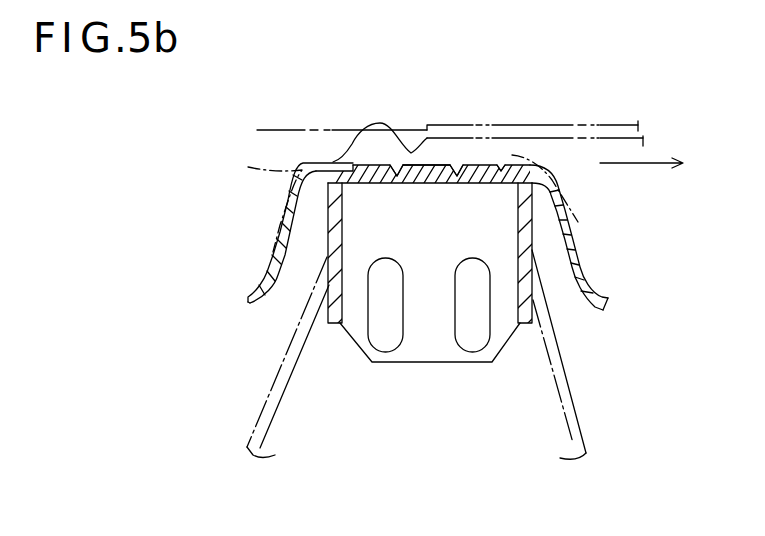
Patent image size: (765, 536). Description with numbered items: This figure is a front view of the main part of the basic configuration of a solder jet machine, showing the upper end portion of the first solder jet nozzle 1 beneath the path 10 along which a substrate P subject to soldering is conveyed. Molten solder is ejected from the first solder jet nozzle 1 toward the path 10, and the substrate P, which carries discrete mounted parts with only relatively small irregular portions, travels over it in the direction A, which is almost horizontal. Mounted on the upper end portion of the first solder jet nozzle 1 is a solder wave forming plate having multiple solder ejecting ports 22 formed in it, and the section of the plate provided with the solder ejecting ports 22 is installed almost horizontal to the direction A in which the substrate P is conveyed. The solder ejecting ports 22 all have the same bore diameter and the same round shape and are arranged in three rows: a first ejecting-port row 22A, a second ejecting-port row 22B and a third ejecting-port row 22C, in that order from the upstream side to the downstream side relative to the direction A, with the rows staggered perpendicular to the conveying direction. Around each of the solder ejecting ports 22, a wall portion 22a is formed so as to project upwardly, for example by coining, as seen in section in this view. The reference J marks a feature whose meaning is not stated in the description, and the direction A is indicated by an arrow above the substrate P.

The first solder jet nozzle 1 is at (598, 375).
The path 10 is at (292, 129).
The solder ejecting ports 22 is at (417, 186).
The first ejecting-port row 22A is at (373, 179).
The second ejecting-port row 22B is at (426, 184).
The third ejecting-port row 22C is at (487, 183).
The wall portion 22a is at (455, 168).
The substrate subject to soldering P is at (523, 125).
The joint line J is at (266, 198).
The direction A is at (641, 180).